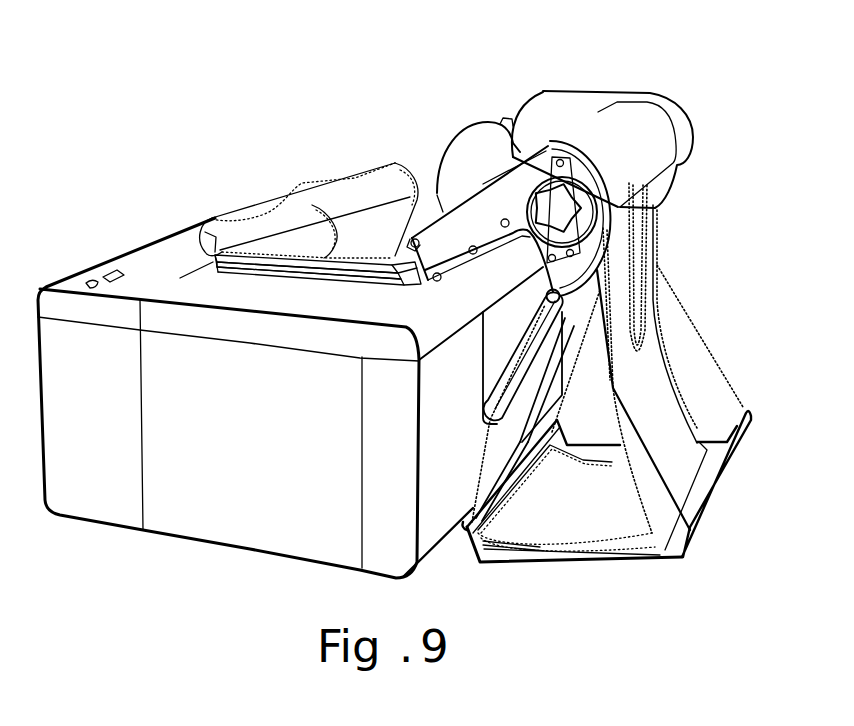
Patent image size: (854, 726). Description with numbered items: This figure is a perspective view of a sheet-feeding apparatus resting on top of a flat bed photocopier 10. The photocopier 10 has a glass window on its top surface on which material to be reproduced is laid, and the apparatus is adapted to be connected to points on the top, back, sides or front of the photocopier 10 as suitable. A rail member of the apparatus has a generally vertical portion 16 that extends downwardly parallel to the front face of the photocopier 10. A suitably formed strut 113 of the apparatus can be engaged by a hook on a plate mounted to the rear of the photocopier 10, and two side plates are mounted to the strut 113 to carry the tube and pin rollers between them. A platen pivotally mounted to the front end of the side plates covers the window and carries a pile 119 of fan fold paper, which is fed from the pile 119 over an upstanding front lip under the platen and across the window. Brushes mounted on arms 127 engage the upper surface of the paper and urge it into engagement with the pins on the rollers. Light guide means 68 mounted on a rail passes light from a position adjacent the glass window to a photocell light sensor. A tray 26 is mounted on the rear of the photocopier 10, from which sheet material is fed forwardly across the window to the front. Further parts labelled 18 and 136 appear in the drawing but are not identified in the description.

The flat bed photocopier 10 is at (122, 250).
The vertical portion 16 is at (279, 258).
The tray end 18 is at (212, 242).
The pile of fan fold paper 119 is at (368, 204).
The light guide means 68 is at (443, 192).
The arms 127 is at (578, 148).
The hub 136 is at (600, 245).
The strut 113 is at (508, 370).
The tray 26 is at (548, 563).